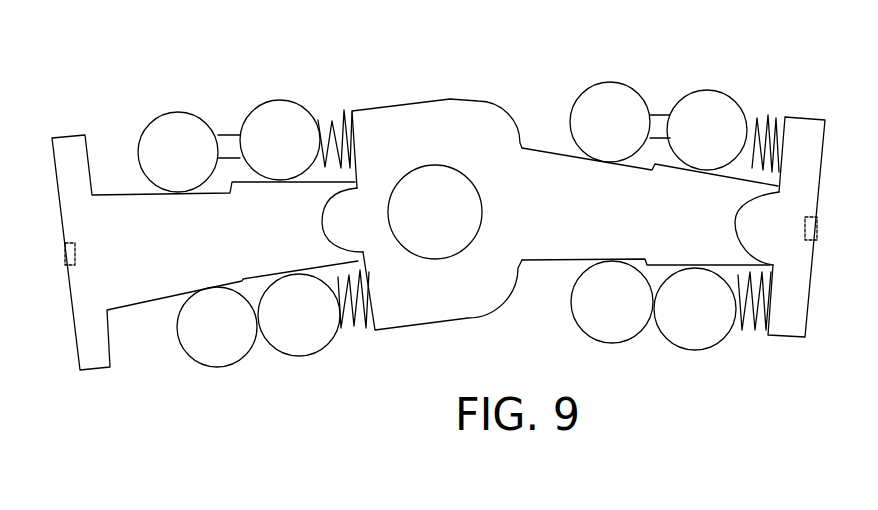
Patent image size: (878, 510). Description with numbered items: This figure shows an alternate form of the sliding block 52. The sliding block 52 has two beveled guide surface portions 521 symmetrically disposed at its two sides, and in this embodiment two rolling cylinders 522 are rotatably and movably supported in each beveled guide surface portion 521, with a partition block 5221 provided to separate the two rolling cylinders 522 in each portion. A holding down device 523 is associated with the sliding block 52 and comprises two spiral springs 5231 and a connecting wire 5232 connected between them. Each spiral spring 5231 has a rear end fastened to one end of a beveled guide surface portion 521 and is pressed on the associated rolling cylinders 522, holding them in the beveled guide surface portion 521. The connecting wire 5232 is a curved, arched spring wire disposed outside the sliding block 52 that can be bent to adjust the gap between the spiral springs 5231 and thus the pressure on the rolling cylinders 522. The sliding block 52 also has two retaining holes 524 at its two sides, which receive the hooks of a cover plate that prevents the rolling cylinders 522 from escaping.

The sliding block 52 is at (437, 119).
The beveled guide surface portion 521 is at (112, 193).
The rolling cylinder 522 is at (253, 120).
The partition block 5221 is at (243, 144).
The holding down device 523 is at (368, 177).
The spiral spring 5231 is at (327, 118).
The connecting wire 5232 is at (323, 223).
The retaining hole 524 is at (63, 252).